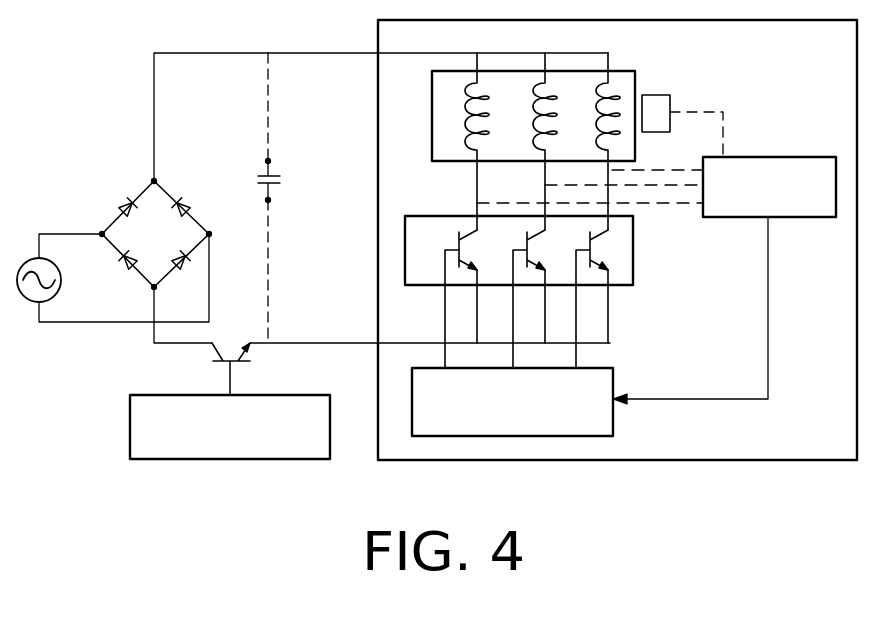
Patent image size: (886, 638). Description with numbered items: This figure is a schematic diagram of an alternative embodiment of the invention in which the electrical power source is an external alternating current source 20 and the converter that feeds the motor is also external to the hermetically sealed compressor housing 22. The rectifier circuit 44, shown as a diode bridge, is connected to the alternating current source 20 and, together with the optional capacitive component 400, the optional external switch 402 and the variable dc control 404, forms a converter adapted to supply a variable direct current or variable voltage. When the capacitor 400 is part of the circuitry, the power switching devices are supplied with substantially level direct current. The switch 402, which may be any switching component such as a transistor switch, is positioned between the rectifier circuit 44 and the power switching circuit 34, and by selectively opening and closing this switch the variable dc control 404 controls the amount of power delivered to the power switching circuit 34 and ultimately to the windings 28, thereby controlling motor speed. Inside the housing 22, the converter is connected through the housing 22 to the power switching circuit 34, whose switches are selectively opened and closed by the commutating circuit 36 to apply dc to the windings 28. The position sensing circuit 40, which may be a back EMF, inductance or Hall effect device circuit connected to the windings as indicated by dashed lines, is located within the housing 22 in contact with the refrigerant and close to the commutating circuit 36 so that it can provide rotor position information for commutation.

The alternating current source 20 is at (24, 300).
The hermetically sealed compressor housing 22 is at (457, 462).
The motor windings 28 is at (632, 72).
The power switching circuit 34 is at (633, 240).
The commutating circuit 36 is at (615, 383).
The position sensing circuit 40 is at (758, 157).
The rectifier circuit 44 is at (171, 242).
The capacitive component 400 is at (272, 170).
The external switch 402 is at (254, 355).
The variable dc control 404 is at (130, 432).